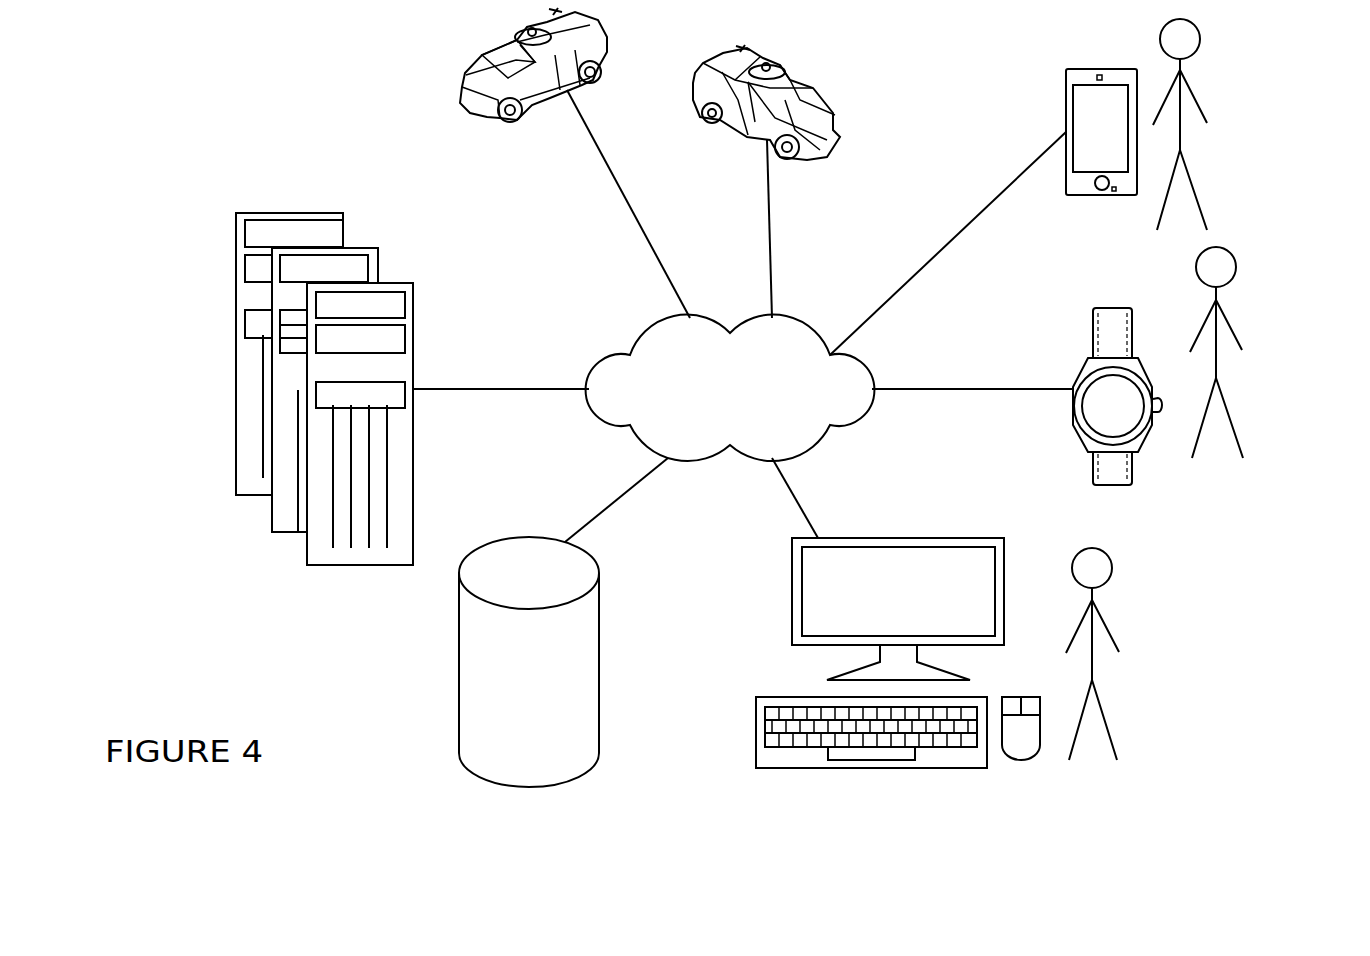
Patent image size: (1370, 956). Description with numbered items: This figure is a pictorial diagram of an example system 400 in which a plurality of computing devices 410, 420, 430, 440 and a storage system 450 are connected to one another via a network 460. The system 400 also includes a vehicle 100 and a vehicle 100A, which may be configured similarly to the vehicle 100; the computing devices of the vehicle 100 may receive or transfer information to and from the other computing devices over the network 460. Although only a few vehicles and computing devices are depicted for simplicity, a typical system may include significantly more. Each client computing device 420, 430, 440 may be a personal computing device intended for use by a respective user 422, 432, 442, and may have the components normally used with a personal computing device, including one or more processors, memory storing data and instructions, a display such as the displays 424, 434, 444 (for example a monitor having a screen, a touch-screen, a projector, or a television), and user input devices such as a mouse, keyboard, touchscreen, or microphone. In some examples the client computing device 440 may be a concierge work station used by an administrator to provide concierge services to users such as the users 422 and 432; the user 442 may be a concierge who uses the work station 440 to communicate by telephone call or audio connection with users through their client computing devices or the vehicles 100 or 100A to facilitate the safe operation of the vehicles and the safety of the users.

The vehicle 100 is at (452, 96).
The vehicle 100A is at (840, 122).
The system 400 is at (203, 708).
The computing device 410 is at (413, 330).
The client computing device 420 is at (1053, 144).
The user 422 is at (1181, 136).
The display 424 is at (1072, 83).
The client computing device 430 is at (1077, 409).
The user 432 is at (1218, 366).
The display 434 is at (1153, 428).
The client computing device 440 is at (927, 619).
The user 442 is at (1094, 664).
The display 444 is at (993, 563).
The storage system 450 is at (601, 676).
The network 460 is at (598, 416).